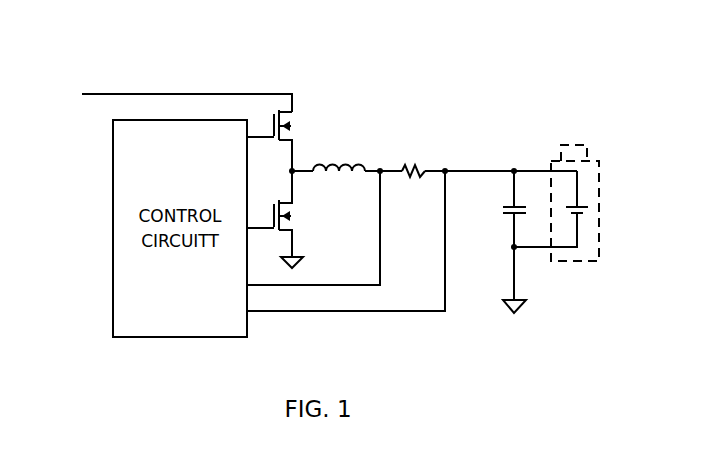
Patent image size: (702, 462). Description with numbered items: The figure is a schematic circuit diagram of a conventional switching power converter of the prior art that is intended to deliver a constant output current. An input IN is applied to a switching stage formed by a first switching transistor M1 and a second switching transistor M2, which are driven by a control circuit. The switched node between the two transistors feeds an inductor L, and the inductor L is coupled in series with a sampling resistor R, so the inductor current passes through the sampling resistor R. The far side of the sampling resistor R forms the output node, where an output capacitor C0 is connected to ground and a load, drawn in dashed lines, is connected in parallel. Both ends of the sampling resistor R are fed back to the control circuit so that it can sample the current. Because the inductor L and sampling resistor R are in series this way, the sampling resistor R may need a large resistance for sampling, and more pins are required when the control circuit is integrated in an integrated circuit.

The input IN is at (168, 98).
The first switching transistor M1 is at (287, 140).
The second switching transistor M2 is at (287, 219).
The inductor L is at (339, 183).
The sampling resistor R is at (413, 182).
The output capacitor C0 is at (496, 242).